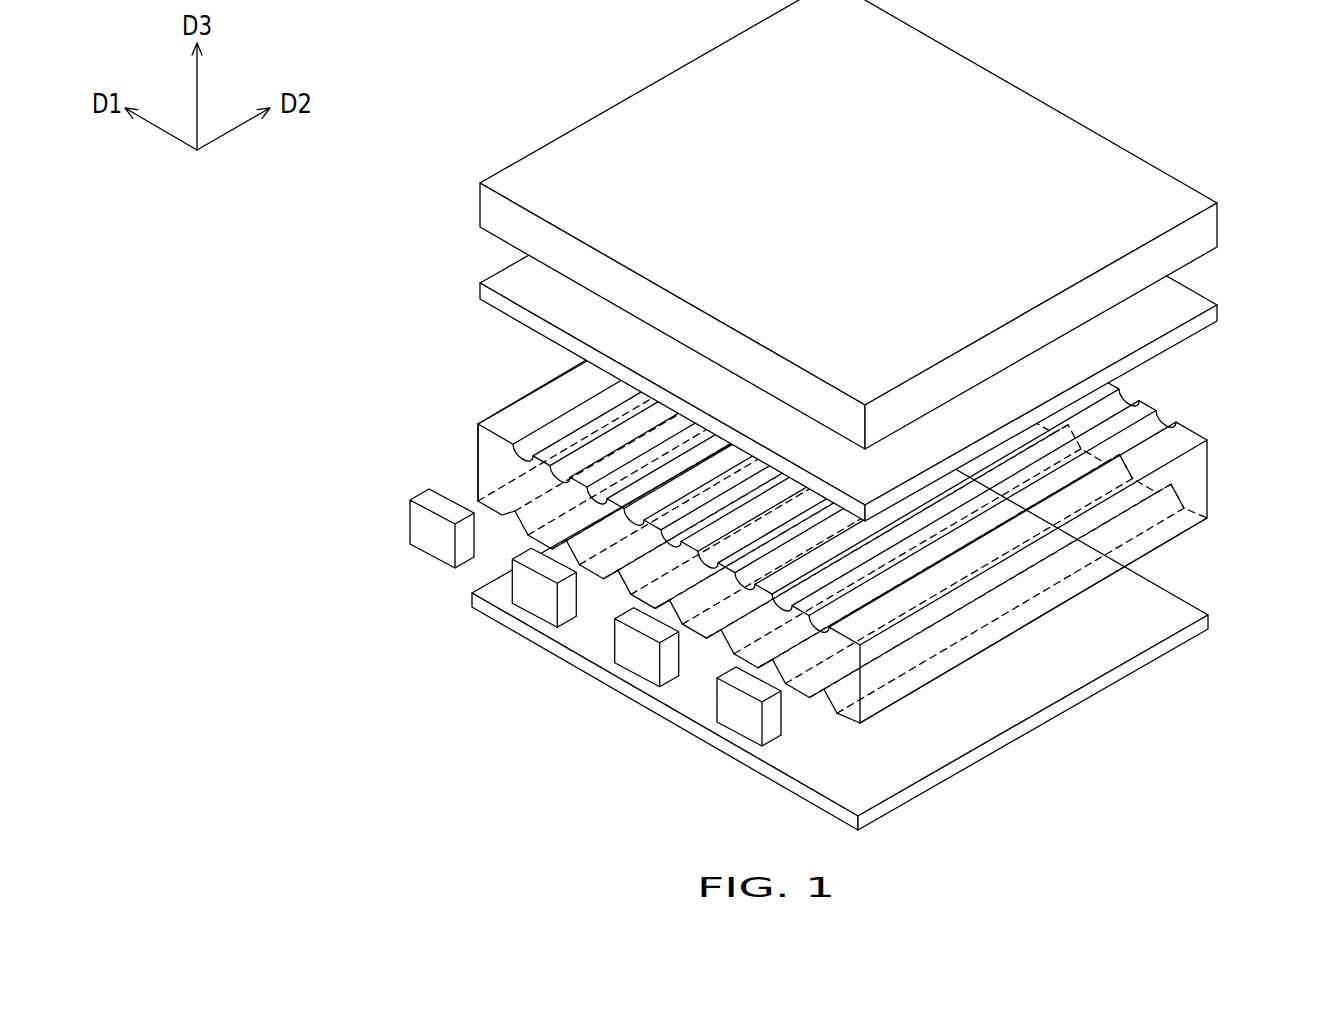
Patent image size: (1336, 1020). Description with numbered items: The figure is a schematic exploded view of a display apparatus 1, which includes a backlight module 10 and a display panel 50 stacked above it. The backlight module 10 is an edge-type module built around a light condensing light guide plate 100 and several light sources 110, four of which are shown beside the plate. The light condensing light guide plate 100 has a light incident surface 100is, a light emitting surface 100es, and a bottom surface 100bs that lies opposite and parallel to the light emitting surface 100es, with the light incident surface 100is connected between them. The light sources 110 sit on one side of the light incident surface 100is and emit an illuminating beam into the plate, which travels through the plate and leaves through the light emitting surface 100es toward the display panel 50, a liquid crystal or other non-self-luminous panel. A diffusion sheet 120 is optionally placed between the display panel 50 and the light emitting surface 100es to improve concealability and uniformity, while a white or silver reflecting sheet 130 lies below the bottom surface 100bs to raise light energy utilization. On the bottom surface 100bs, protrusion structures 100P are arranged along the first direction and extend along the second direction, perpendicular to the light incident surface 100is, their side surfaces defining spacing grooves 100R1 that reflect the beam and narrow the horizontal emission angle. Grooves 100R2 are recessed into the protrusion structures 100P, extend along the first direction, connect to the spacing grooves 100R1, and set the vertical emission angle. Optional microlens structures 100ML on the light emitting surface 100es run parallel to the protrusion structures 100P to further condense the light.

The display apparatus 1 is at (795, 418).
The backlight module 10 is at (348, 277).
The display panel 50 is at (1203, 236).
The light condensing light guide plate 100 is at (834, 527).
The microlens structures 100ML is at (1186, 434).
The light emitting surface 100es is at (500, 438).
The light incident surface 100is is at (489, 458).
The bottom surface 100bs is at (1184, 533).
The protrusion structures 100P is at (840, 728).
The spacing grooves 100R1 is at (768, 675).
The grooves 100R2 is at (1003, 650).
The light source 110 is at (637, 655).
The diffusion sheet 120 is at (1207, 317).
The reflecting sheet 130 is at (1206, 622).